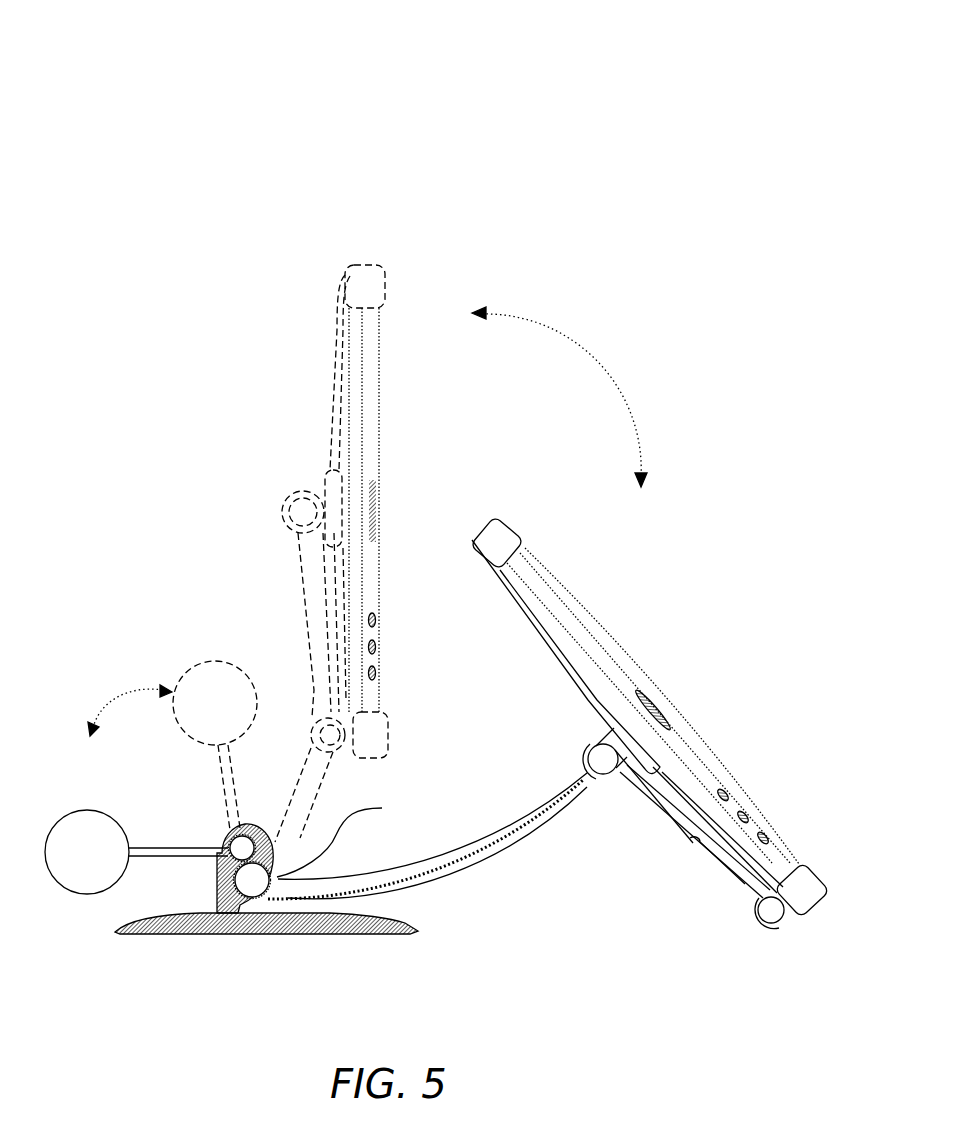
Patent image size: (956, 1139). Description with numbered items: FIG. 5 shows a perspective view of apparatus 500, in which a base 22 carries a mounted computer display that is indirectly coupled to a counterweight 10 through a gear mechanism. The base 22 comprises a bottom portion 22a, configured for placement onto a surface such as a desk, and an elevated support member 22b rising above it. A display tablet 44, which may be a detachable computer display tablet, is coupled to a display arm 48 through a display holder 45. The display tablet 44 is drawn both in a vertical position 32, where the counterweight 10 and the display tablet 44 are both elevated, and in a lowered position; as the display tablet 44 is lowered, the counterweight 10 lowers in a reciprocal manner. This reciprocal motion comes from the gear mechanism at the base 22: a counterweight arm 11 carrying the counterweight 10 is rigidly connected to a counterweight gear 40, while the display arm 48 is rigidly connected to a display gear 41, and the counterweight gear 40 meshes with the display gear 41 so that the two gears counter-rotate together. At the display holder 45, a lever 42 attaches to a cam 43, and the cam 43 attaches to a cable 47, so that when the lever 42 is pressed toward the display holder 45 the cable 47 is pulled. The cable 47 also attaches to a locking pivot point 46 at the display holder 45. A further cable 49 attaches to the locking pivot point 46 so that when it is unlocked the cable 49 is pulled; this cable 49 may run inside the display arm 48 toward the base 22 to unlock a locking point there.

The apparatus 500 is at (425, 80).
The vertical position 32 is at (202, 648).
The counterweight 10 is at (92, 810).
The counterweight arm 11 is at (167, 842).
The elevated support member 22b is at (218, 840).
The counterweight gear 40 is at (242, 836).
The display gear 41 is at (263, 850).
The base 22 is at (217, 878).
The bottom portion 22a is at (418, 925).
The display arm 48 is at (462, 863).
The cable 49 is at (348, 895).
The display holder 45 is at (547, 645).
The display tablet 44 is at (662, 705).
The cable 47 is at (680, 782).
The locking pivot point 46 is at (588, 758).
The lever 42 is at (695, 841).
The cam 43 is at (755, 912).